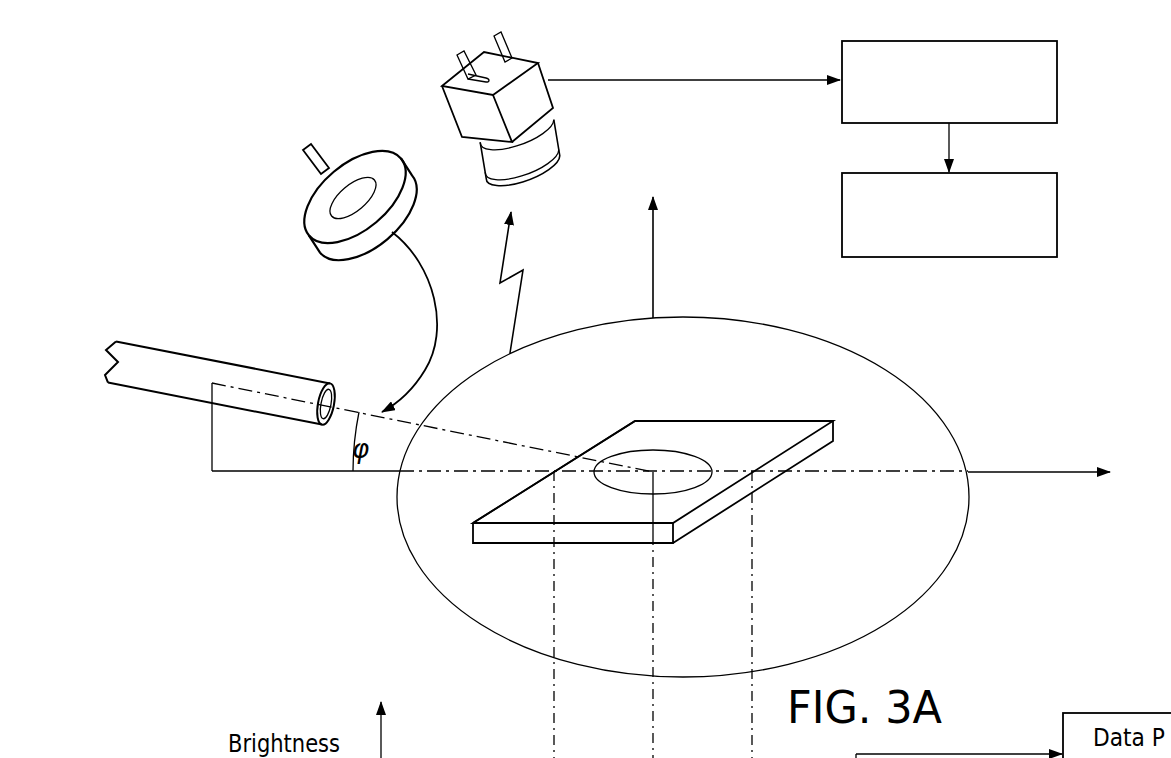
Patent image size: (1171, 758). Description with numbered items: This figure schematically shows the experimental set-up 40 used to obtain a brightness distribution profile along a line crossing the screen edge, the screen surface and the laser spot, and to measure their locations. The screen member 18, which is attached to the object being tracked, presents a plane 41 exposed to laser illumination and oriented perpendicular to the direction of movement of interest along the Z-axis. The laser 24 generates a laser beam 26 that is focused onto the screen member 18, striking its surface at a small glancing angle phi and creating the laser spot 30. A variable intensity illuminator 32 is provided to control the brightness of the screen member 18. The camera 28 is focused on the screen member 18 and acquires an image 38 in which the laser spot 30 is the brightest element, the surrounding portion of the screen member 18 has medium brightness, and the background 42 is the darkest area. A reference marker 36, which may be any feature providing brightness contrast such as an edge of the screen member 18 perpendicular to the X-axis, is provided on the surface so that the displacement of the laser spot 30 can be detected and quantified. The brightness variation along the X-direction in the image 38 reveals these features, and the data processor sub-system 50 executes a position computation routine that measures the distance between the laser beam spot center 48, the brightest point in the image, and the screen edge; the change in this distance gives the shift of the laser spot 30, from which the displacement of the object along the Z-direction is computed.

The screen member 18 is at (738, 435).
The laser 24 is at (144, 342).
The laser beam 26 is at (319, 158).
The camera 28 is at (538, 63).
The laser spot 30 is at (672, 450).
The variable intensity illuminator 32 is at (325, 248).
The reference marker 36 is at (486, 512).
The image 38 is at (506, 258).
The experimental set-up 40 is at (594, 197).
The plane 41 is at (783, 430).
The background 42 is at (948, 565).
The laser beam spot center 48 is at (654, 646).
The data processor sub-system 50 is at (1057, 80).